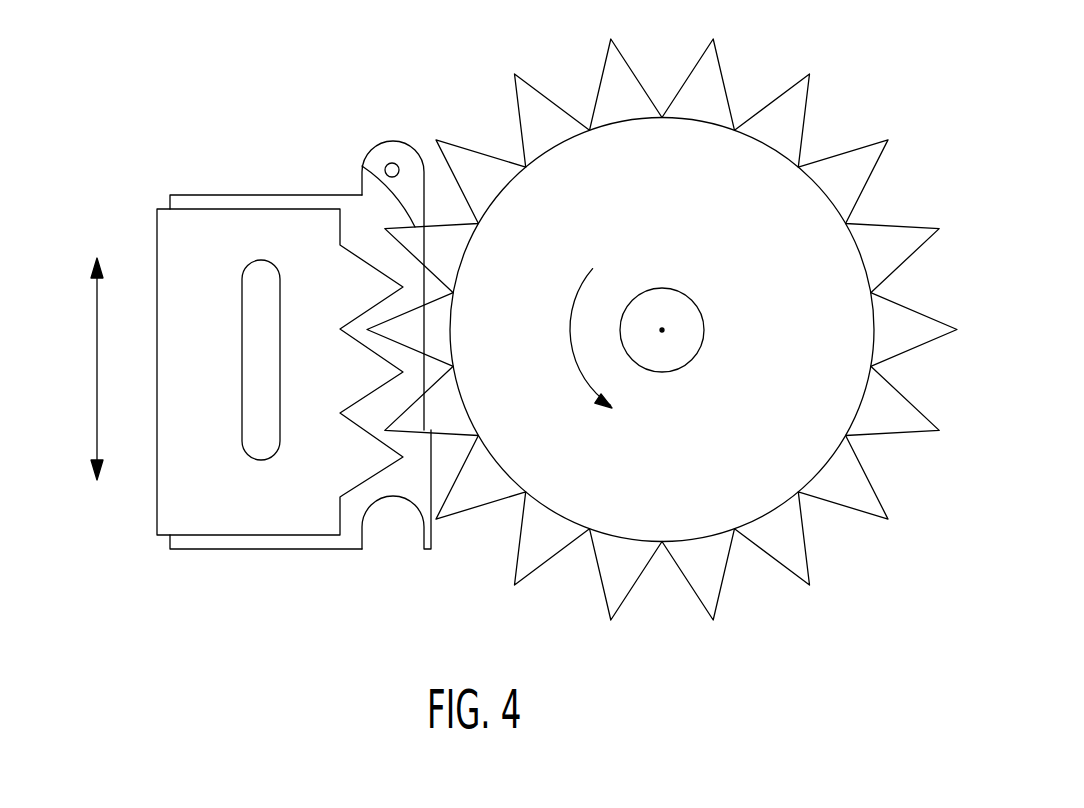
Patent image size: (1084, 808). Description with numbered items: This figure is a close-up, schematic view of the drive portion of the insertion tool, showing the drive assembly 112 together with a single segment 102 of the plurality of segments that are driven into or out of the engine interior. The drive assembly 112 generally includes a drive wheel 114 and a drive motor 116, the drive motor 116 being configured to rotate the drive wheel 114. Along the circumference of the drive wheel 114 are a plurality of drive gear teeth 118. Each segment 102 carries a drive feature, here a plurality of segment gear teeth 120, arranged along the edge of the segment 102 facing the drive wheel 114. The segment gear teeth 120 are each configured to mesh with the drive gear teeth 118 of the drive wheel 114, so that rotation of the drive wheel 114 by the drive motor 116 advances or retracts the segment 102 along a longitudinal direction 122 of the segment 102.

The segment 102 is at (155, 140).
The drive assembly 112 is at (662, 315).
The drive wheel 114 is at (838, 248).
The drive motor 116 is at (685, 317).
The drive gear teeth 118 is at (363, 166).
The segment gear teeth 120 is at (370, 448).
The longitudinal direction 122 is at (97, 343).